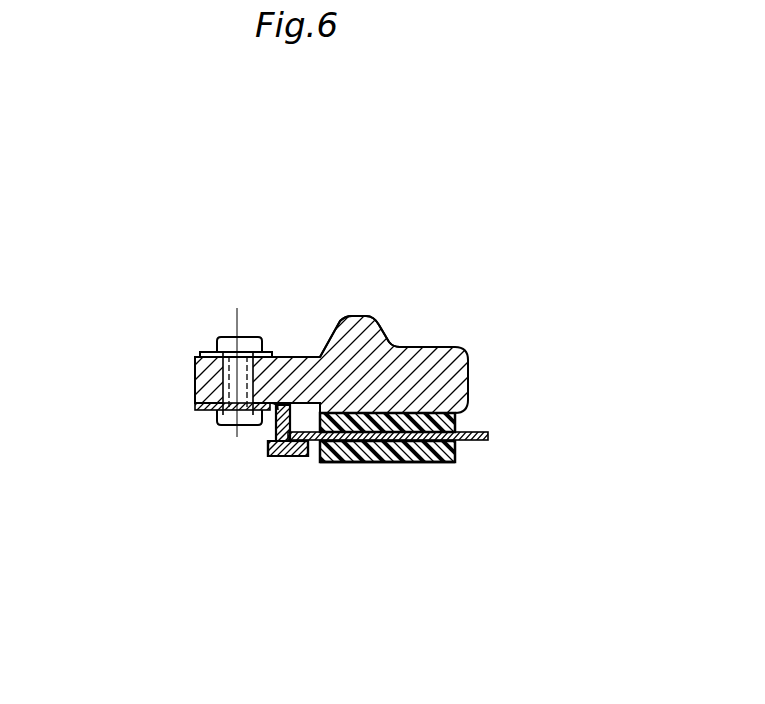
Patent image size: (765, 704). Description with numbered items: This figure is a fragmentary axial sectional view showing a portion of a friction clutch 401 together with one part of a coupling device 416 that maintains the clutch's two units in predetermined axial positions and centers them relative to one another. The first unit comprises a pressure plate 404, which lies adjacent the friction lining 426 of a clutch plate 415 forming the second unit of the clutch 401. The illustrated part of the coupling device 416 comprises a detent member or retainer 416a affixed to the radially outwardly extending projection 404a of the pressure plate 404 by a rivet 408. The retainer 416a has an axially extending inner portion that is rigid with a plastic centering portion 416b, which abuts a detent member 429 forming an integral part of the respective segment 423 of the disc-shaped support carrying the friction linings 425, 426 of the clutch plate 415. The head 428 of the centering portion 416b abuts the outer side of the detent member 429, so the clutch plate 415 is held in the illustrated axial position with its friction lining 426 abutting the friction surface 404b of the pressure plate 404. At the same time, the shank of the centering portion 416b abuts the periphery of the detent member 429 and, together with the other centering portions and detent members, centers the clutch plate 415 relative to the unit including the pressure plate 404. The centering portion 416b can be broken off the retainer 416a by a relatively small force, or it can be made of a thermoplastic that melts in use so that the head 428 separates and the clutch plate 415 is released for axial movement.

The friction clutch 401 is at (347, 293).
The pressure plate 404 is at (425, 352).
The radially outwardly extending projection 404a is at (202, 383).
The friction surface 404b is at (400, 348).
The rivet 408 is at (233, 362).
The clutch plate 415 is at (408, 463).
The coupling device 416 is at (270, 453).
The detent member or retainer 416a is at (205, 405).
The plastic centering portion 416b is at (275, 450).
The segment of the disc-shaped support 423 is at (690, 405).
The friction lining 425 is at (453, 463).
The friction lining 426 is at (463, 410).
The head of the centering portion 428 is at (302, 458).
The detent member 429 is at (303, 455).